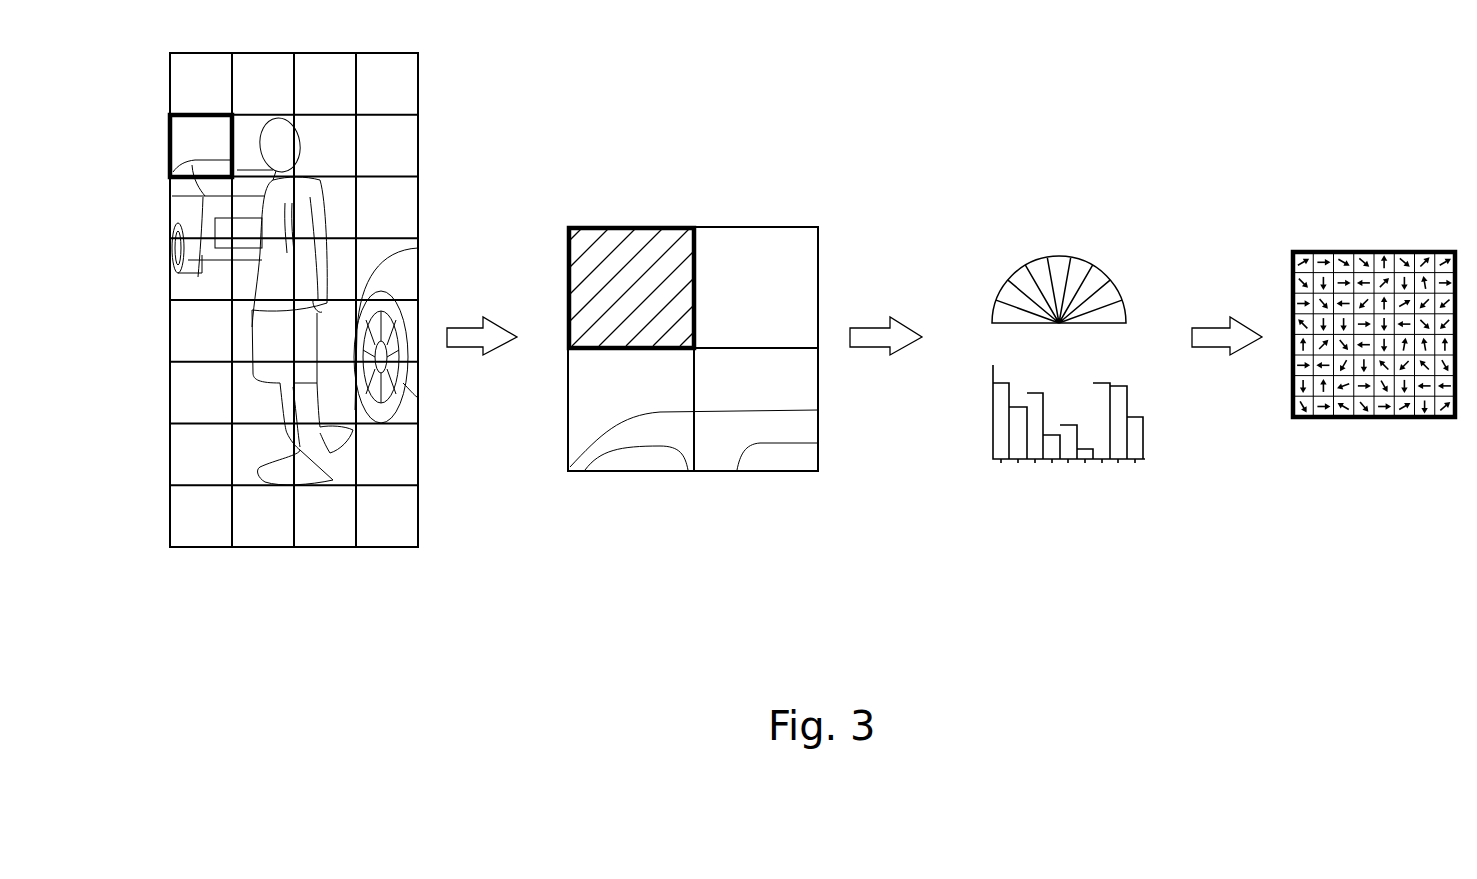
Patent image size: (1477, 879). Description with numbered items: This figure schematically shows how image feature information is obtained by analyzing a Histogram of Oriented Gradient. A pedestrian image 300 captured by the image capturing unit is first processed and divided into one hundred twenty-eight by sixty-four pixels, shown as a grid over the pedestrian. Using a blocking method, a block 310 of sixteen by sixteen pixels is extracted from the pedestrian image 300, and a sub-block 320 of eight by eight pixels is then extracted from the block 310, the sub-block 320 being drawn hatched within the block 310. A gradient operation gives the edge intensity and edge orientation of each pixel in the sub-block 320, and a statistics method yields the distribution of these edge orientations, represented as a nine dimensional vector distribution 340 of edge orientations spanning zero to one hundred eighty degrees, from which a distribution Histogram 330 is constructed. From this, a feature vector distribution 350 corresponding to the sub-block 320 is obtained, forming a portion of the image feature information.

The pedestrian image 300 is at (320, 548).
The block 310 is at (168, 145).
The sub-block 320 is at (568, 286).
The distribution Histogram 330 is at (993, 415).
The 9 dimensional vector distribution 340 is at (1060, 238).
The feature vector distribution 350 is at (1378, 250).